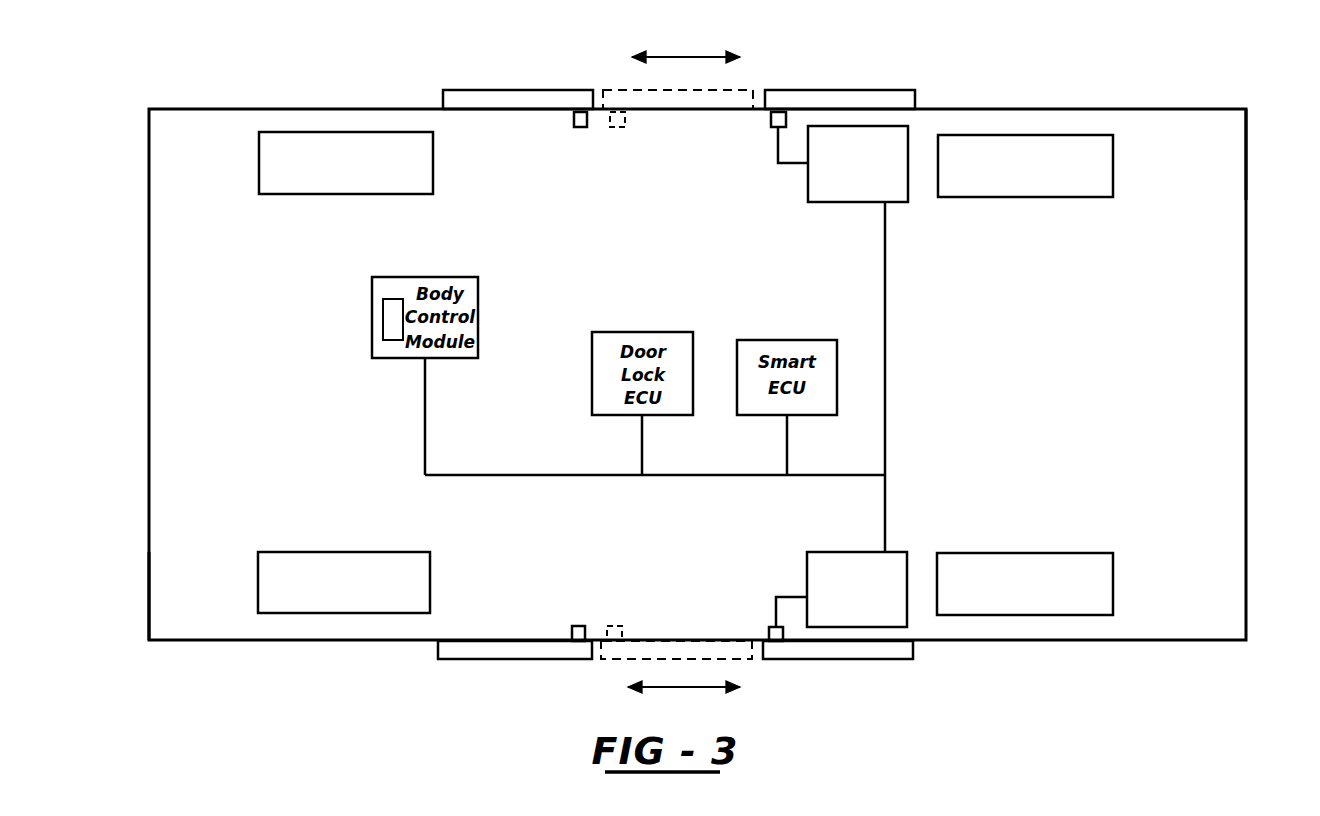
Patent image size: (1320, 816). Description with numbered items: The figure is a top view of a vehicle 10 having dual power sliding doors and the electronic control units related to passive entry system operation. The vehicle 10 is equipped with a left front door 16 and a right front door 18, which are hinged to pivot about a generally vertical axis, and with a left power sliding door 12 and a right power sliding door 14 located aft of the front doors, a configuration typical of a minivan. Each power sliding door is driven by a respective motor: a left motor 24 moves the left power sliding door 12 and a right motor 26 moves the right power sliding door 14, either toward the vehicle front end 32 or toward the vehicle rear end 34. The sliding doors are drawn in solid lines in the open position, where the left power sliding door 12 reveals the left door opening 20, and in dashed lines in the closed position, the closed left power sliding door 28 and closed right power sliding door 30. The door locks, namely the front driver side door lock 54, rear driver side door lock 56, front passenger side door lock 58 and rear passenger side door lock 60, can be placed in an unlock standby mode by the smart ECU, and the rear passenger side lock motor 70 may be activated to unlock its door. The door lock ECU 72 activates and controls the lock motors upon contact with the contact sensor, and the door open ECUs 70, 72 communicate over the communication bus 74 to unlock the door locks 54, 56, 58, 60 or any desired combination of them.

The vehicle 10 is at (212, 66).
The left power sliding door 12 is at (913, 660).
The right power sliding door 14 is at (895, 90).
The left front door 16 is at (456, 659).
The right front door 18 is at (487, 90).
The left door opening 20 is at (765, 88).
The left motor 24 is at (769, 630).
The right motor 26 is at (767, 128).
The closed left power sliding door 28 is at (620, 662).
The closed right power sliding door 30 is at (623, 83).
The vehicle front end 32 is at (149, 552).
The vehicle rear end 34 is at (1246, 178).
The front driver side door lock 54 is at (577, 625).
The rear driver side door lock 56 is at (617, 623).
The front passenger side door lock 58 is at (578, 128).
The rear passenger side door lock 60 is at (617, 128).
The rear passenger side lock motor 70 is at (842, 552).
The door lock ECU 72 is at (808, 189).
The communication bus 74 is at (885, 377).